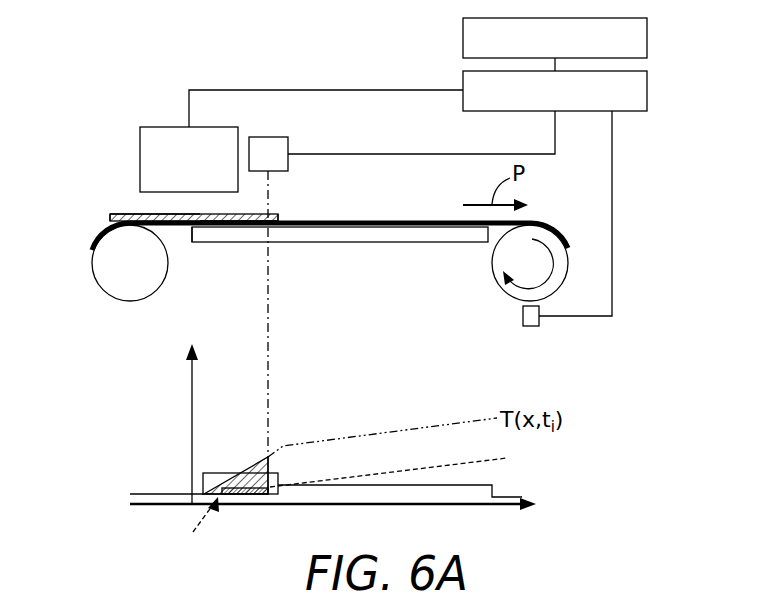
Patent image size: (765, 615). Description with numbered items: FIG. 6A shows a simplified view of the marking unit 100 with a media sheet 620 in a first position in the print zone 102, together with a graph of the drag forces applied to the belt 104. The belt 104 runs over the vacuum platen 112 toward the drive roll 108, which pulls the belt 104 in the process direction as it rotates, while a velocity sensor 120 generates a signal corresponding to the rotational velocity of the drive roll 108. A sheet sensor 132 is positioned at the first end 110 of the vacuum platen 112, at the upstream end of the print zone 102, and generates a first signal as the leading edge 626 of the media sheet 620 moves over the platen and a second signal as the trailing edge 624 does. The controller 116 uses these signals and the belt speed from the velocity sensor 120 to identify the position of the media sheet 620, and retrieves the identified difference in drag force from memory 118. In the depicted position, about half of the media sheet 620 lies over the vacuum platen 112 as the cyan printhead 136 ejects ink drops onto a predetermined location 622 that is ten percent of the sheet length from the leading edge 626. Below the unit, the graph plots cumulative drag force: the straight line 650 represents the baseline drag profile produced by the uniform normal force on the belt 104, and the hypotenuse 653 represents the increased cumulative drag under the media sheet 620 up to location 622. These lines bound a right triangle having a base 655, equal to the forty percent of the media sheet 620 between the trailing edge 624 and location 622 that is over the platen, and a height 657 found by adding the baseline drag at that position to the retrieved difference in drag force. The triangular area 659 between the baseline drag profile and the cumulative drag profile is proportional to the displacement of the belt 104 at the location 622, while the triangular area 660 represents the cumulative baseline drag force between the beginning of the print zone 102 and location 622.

The marking unit 100 is at (82, 122).
The print zone 102 is at (198, 209).
The belt 104 is at (388, 222).
The drive roll 108 is at (505, 290).
The first end of the vacuum platen 110 is at (193, 243).
The vacuum platen 112 is at (338, 242).
The controller 116 is at (647, 90).
The memory 118 is at (647, 38).
The velocity sensor 120 is at (531, 327).
The sheet sensor 132 is at (162, 127).
The cyan printhead 136 is at (272, 137).
The media sheet 620 is at (140, 213).
The predetermined location 622 is at (272, 213).
The trailing edge 624 is at (110, 218).
The leading edge 626 is at (282, 219).
The line 650 is at (476, 461).
The hypotenuse 653 is at (255, 461).
The base 655 is at (257, 497).
The height 657 is at (272, 463).
The triangular area 659 is at (227, 474).
The triangular area 660 is at (243, 496).